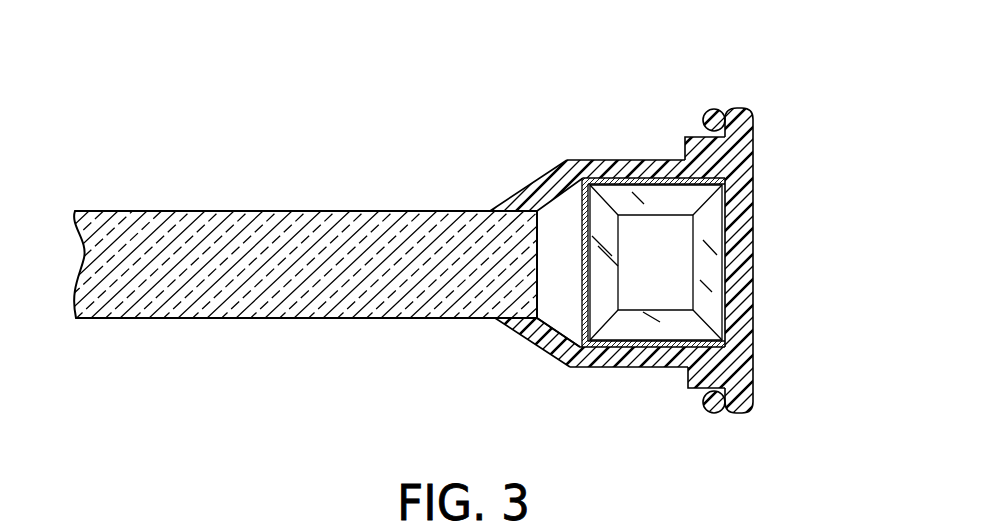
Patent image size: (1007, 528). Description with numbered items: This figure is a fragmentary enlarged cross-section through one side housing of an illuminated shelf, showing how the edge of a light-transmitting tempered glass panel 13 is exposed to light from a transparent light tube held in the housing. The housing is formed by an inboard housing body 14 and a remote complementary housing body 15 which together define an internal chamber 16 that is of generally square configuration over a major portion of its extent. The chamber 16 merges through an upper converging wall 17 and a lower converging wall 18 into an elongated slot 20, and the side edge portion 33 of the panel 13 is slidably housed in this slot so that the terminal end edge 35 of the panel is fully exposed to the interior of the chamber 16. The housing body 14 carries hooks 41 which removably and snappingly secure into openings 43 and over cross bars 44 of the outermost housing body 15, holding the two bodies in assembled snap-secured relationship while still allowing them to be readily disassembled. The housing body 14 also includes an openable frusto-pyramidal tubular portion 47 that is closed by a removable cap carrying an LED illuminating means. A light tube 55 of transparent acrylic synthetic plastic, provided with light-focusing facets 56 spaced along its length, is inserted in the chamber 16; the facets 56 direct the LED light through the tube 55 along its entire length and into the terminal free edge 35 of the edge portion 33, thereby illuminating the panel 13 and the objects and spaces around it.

The light-transmitting panel 13 is at (190, 318).
The inboard housing body 14 is at (595, 160).
The remote housing body 15 is at (755, 238).
The internal chamber 16 is at (567, 318).
The upper converging wall 17 is at (530, 183).
The lower converging wall 18 is at (513, 330).
The elongated slot 20 is at (500, 222).
The side edge portion 33 is at (420, 318).
The terminal end edge 35 is at (538, 252).
The upwardly directed hook 41 is at (762, 137).
The opening 43 is at (686, 118).
The cross bar 44 is at (713, 109).
The frusto-pyramidal tubular portion 47 is at (708, 292).
The light tube 55 is at (660, 210).
The light-focusing facet 56 is at (618, 258).